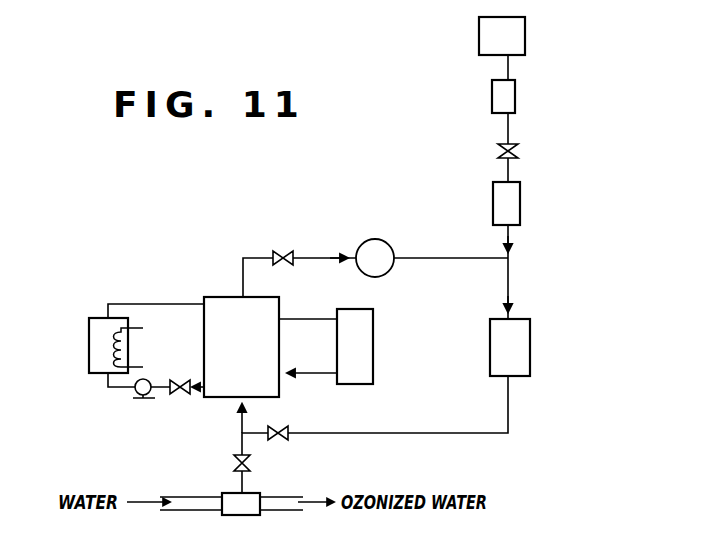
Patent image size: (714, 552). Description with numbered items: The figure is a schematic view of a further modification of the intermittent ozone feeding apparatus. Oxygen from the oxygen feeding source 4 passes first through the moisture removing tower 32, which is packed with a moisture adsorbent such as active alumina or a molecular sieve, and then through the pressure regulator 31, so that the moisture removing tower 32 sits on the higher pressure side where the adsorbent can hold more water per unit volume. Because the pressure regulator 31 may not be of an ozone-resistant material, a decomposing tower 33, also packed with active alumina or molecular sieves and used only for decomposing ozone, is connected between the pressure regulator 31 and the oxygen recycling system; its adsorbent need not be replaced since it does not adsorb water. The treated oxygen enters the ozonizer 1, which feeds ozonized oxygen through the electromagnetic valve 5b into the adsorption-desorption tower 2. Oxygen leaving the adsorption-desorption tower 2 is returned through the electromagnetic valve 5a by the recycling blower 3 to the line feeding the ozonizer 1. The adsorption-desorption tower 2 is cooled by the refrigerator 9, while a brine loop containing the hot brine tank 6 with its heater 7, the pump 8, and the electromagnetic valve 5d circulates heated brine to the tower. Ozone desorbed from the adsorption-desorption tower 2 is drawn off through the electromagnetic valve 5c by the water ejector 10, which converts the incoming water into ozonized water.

The ozonizer 1 is at (530, 343).
The adsorption-desorption tower 2 is at (224, 297).
The recycling blower 3 is at (388, 243).
The oxygen feeding source 4 is at (525, 40).
The electromagnetic valve 5a is at (283, 250).
The electromagnetic valve 5b is at (282, 426).
The electromagnetic valve 5c is at (250, 462).
The electromagnetic valve 5d is at (172, 395).
The hot brine tank 6 is at (89, 353).
The heater 7 is at (140, 330).
The pump 8 is at (133, 396).
The refrigerator 9 is at (373, 335).
The water ejector 10 is at (232, 493).
The pressure regulator 31 is at (518, 151).
The moisture removing tower 32 is at (515, 101).
The decomposing tower 33 is at (520, 206).